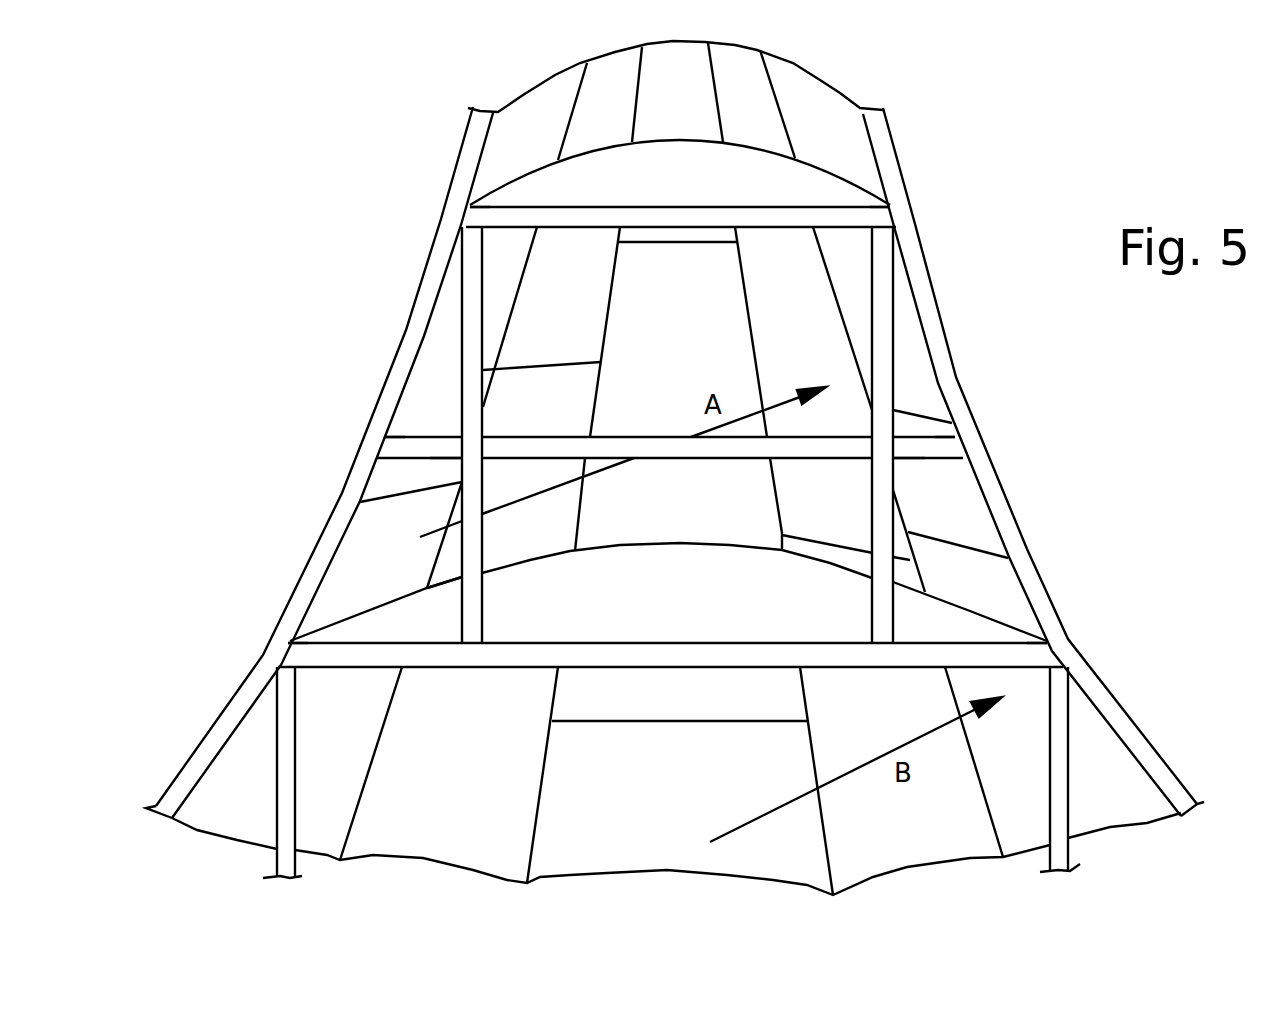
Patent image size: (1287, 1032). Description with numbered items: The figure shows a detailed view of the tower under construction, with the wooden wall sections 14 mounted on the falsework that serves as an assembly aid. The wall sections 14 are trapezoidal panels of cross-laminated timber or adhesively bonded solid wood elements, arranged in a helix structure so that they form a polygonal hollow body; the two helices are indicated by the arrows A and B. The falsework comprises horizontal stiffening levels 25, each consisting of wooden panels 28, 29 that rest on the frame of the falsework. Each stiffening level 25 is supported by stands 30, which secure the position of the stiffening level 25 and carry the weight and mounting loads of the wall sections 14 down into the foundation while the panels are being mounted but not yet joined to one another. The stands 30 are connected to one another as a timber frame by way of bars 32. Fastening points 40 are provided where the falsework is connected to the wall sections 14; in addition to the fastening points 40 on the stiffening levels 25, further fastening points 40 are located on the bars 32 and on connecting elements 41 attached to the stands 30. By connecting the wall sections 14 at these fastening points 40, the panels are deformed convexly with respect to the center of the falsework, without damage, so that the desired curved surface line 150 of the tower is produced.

The wall section 14 is at (1177, 702).
The stiffening level 25 is at (853, 218).
The wooden panel 28 is at (668, 390).
The wooden panel 29 is at (668, 390).
The stand 30 is at (472, 388).
The bar 32 is at (783, 452).
The fastening point 40 is at (462, 222).
The connecting element 41 is at (427, 448).
The surface line 150 is at (1045, 537).